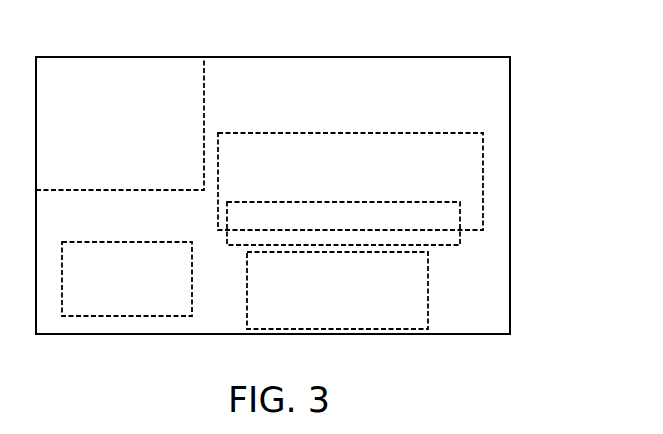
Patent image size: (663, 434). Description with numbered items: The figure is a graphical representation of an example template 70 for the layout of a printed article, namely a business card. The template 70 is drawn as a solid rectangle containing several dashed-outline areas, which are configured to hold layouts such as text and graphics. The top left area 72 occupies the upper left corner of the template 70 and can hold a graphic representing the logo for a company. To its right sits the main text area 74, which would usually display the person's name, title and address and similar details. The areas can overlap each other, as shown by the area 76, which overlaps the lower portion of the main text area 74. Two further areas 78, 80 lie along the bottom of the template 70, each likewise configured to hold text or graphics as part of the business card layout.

The template 70 is at (283, 31).
The top left area 72 is at (107, 67).
The main text area 74 is at (470, 165).
The area 76 is at (450, 240).
The area 78 is at (122, 302).
The area 80 is at (384, 322).